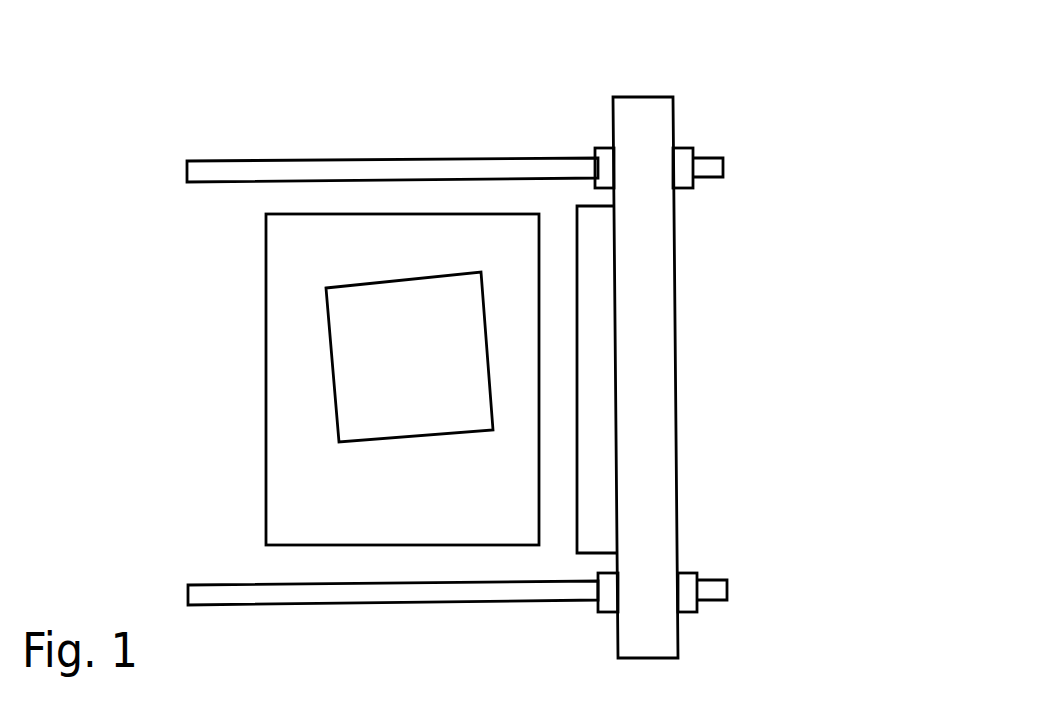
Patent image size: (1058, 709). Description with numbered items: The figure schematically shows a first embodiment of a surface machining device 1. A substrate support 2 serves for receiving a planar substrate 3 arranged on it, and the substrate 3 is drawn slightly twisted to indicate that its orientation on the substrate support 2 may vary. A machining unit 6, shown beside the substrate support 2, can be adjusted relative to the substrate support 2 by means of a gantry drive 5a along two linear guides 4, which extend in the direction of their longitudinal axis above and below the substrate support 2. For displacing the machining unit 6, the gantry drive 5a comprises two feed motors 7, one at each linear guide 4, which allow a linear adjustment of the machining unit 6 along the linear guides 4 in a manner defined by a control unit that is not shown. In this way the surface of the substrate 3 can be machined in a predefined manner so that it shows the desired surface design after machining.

The surface machining device 1 is at (818, 110).
The substrate support 2 is at (293, 402).
The planar substrate 3 is at (373, 310).
The linear guides 4 is at (333, 170).
The gantry drive 5a is at (645, 393).
The machining unit 6 is at (594, 292).
The feed motors 7 is at (682, 156).